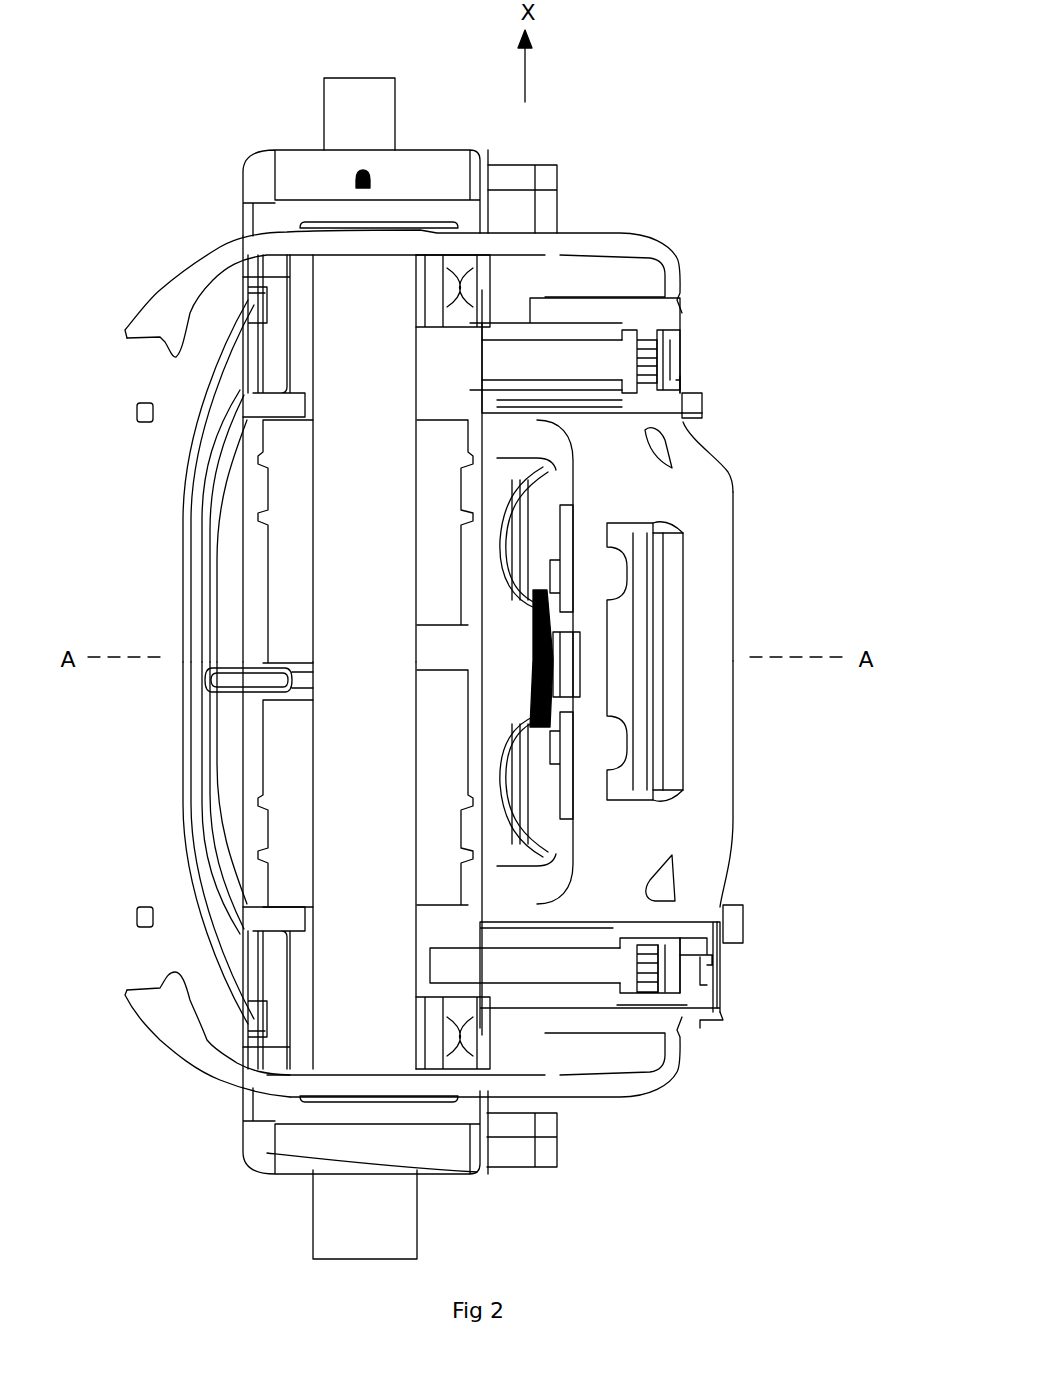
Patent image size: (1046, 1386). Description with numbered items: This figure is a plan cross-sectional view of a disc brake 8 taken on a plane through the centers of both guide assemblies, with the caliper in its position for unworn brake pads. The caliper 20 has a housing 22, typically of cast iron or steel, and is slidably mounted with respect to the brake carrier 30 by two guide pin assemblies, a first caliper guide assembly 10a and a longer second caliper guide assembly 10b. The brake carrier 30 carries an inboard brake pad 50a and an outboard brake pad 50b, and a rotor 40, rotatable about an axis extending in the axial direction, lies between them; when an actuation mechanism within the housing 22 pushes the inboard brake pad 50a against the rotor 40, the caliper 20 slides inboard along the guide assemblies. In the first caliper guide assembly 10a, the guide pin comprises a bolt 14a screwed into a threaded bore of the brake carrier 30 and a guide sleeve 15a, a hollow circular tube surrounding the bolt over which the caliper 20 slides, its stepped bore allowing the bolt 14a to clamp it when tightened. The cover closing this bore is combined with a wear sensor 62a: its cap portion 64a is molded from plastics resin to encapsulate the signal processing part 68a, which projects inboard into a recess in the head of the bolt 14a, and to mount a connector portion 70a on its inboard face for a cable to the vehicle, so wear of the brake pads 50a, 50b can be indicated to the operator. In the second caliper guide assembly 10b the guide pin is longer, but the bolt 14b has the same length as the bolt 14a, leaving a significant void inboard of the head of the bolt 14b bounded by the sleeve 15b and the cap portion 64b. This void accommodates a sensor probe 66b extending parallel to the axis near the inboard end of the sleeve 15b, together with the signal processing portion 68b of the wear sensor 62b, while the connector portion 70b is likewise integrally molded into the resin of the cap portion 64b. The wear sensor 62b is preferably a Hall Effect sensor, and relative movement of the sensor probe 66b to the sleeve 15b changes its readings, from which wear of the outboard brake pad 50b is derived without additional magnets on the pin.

The disc brake 8 is at (750, 199).
The rotor 40 is at (383, 127).
The caliper 20 is at (515, 243).
The brake carrier 30 is at (288, 1142).
The bolt 14a is at (543, 353).
The bolt 14b is at (541, 962).
The guide sleeve 15a is at (568, 335).
The sleeve 15b is at (703, 1003).
The first caliper guide assembly 10a is at (690, 335).
The second caliper guide assembly 10b is at (730, 990).
The signal processing part 68a is at (670, 363).
The signal processing portion 68b is at (705, 963).
The cap portion 64a is at (683, 377).
The cap portion 64b is at (727, 977).
The wear sensor 62a is at (713, 398).
The wear sensor 62b is at (752, 947).
The connector portion 70a is at (703, 420).
The connector portion 70b is at (743, 917).
The sensor probe 66b is at (685, 945).
The inboard brake pad 50a is at (470, 607).
The outboard brake pad 50b is at (252, 748).
The housing 22 is at (705, 810).